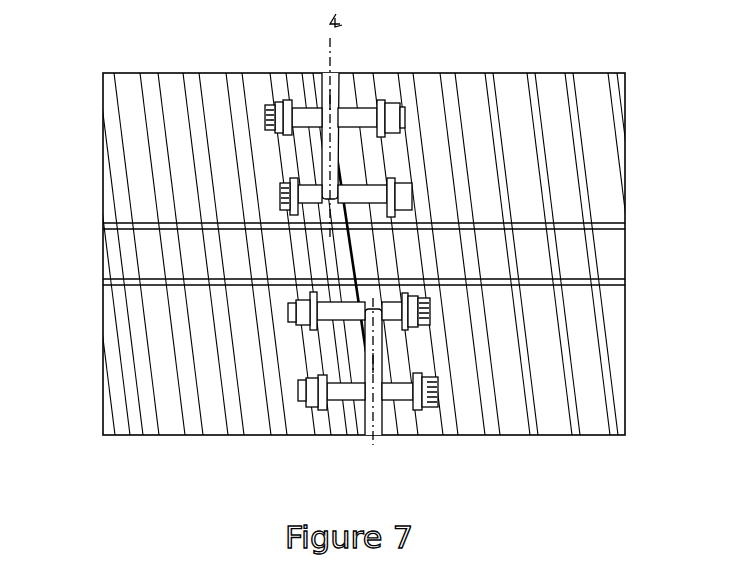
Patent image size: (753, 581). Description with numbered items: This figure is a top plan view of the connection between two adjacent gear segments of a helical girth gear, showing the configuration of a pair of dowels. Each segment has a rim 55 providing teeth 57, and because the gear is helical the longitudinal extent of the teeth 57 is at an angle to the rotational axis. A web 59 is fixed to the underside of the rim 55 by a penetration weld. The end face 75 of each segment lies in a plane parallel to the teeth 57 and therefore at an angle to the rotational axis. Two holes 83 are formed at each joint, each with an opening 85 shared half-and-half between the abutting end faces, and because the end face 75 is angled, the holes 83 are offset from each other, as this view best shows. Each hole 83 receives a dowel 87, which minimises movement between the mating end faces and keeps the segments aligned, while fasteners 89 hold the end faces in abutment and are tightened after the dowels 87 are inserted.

The rim 55 is at (105, 163).
The teeth 57 is at (108, 98).
The web 59 is at (112, 250).
The end face 75 is at (353, 263).
The hole 83 is at (322, 157).
The opening 85 is at (332, 72).
The dowel 87 is at (333, 100).
The fastener 89 is at (267, 108).